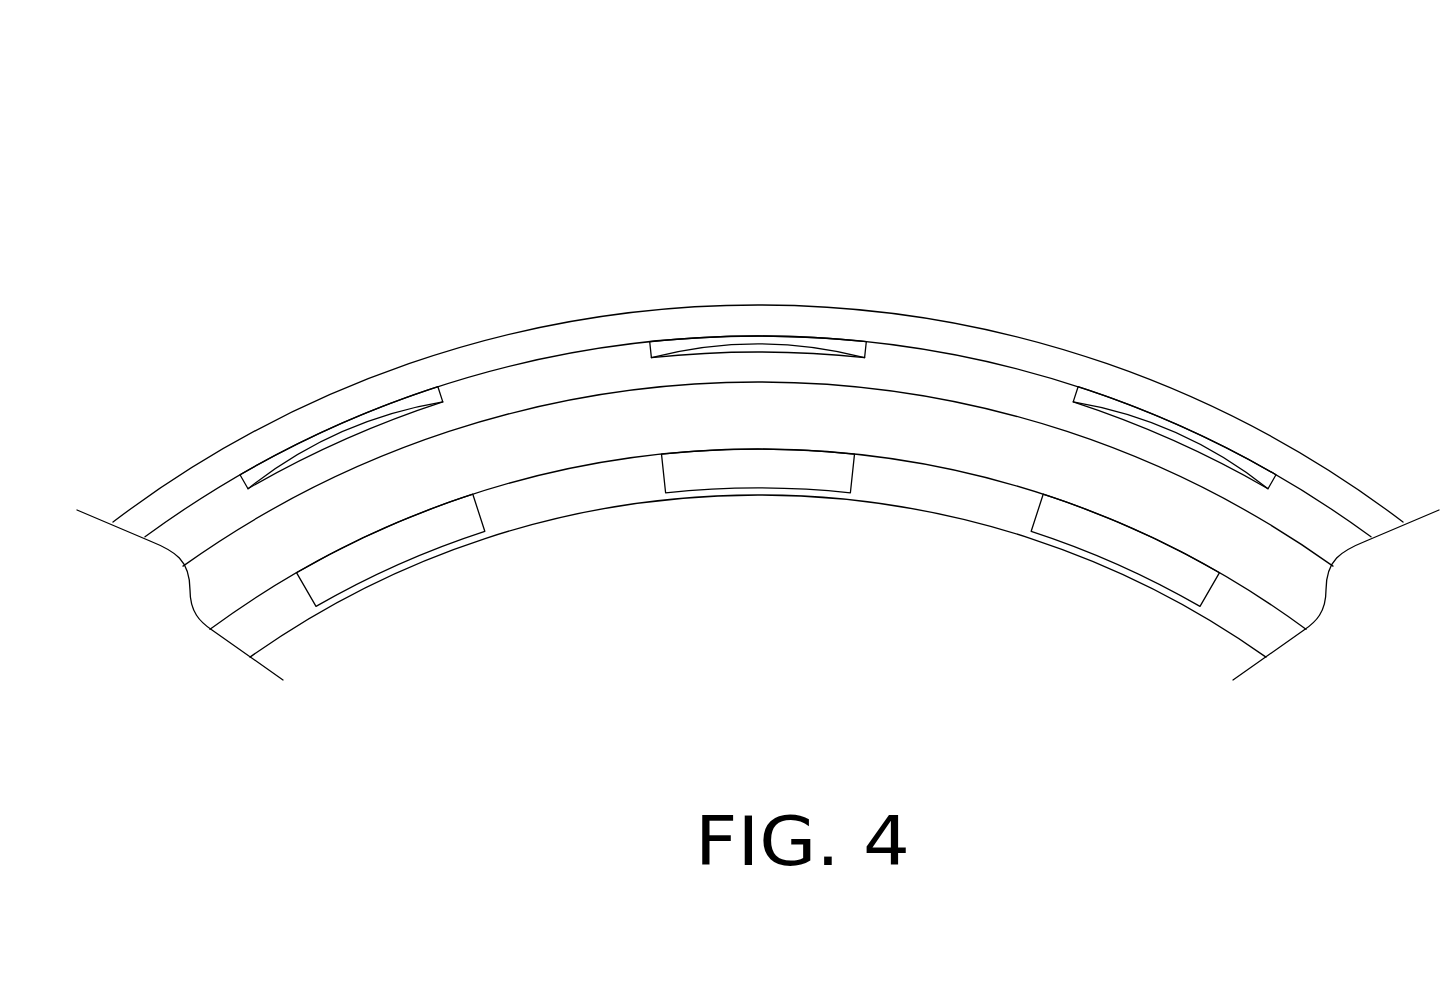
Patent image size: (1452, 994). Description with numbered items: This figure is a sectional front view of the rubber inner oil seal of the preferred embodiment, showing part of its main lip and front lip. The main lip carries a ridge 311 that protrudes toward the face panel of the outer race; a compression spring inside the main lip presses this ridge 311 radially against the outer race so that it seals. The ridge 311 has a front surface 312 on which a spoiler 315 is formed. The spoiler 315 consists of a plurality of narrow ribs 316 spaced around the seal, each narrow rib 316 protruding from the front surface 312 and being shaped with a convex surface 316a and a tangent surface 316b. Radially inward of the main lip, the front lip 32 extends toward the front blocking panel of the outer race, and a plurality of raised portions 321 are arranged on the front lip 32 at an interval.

The ridge 311 is at (457, 348).
The front surface 312 is at (200, 525).
The spoiler 315 is at (1145, 73).
The narrow rib 316 is at (960, 173).
The convex surface 316a is at (855, 345).
The tangent surface 316b is at (748, 348).
The front lip 32 is at (972, 498).
The raised portion 321 is at (775, 463).